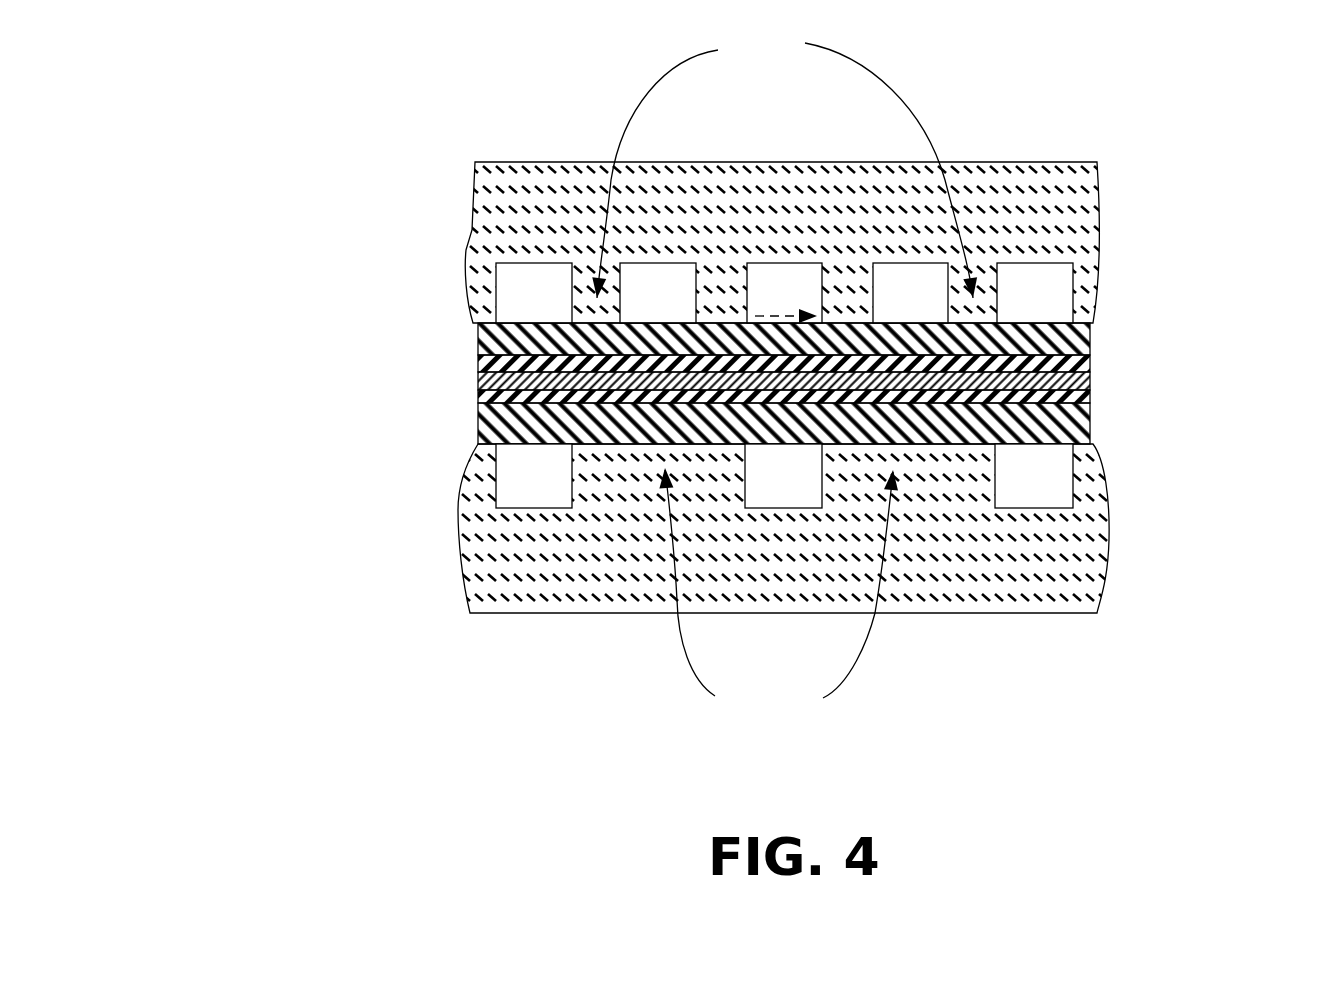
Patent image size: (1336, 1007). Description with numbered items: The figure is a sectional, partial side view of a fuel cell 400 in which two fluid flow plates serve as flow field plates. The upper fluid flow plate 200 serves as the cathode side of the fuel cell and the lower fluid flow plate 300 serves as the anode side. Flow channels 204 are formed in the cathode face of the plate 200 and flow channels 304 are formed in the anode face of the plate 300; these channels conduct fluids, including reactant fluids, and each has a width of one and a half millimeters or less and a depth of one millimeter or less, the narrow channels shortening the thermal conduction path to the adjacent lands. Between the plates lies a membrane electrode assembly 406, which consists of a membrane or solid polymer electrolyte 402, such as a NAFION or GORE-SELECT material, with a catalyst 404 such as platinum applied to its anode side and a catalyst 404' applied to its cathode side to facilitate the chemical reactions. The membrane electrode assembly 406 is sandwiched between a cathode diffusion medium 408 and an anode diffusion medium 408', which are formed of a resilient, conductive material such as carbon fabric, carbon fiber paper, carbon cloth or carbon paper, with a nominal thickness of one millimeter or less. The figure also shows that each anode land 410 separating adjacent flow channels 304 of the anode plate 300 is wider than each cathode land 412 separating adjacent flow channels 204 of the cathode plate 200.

The fuel cell 400 is at (318, 164).
The fluid flow plate 200 is at (812, 209).
The flow channel 204 is at (998, 285).
The fluid flow plate 300 is at (802, 572).
The flow channel 304 is at (996, 477).
The solid electrolyte 402 is at (1090, 381).
The catalyst 404 is at (883, 324).
The catalyst 404' is at (895, 437).
The membrane electrode assembly 406 is at (831, 380).
The cathode diffusion medium 408 is at (681, 322).
The anode diffusion medium 408' is at (686, 465).
The anode land 410 is at (778, 597).
The cathode land 412 is at (784, 159).